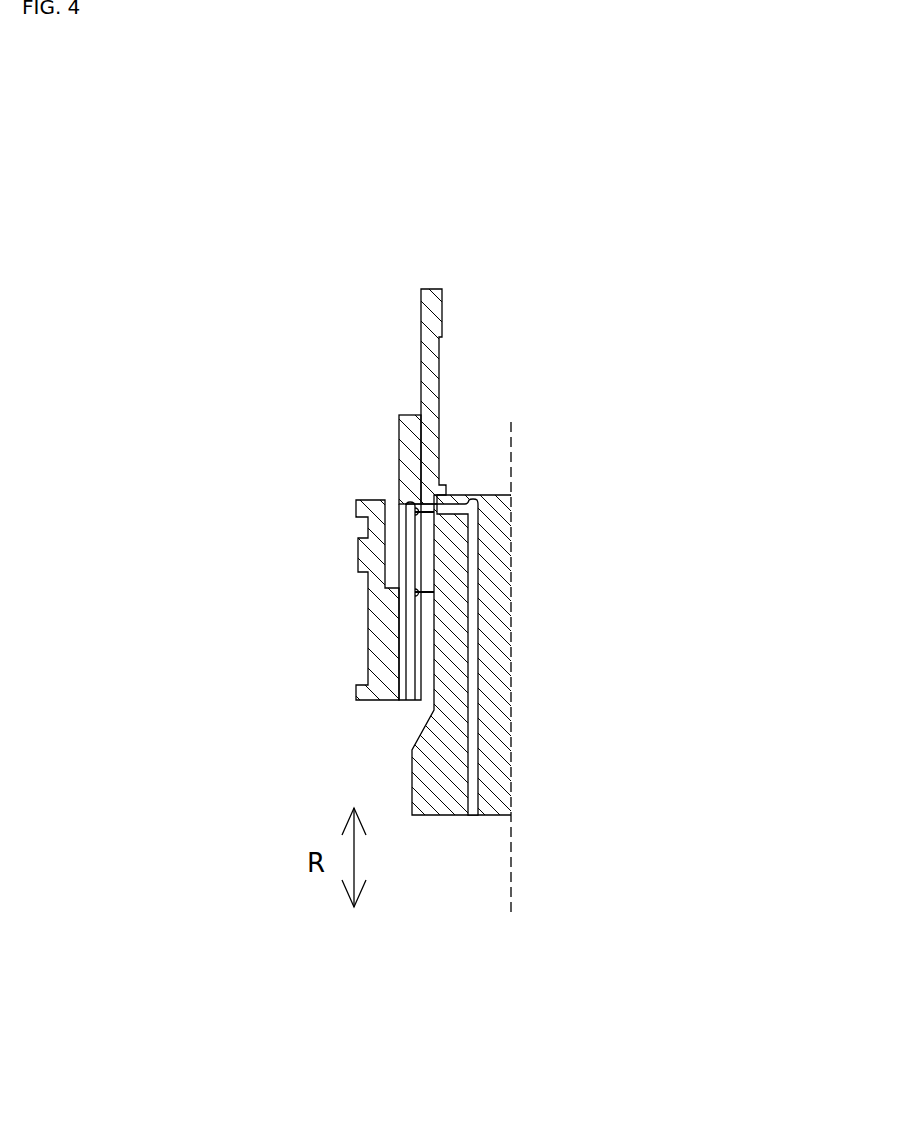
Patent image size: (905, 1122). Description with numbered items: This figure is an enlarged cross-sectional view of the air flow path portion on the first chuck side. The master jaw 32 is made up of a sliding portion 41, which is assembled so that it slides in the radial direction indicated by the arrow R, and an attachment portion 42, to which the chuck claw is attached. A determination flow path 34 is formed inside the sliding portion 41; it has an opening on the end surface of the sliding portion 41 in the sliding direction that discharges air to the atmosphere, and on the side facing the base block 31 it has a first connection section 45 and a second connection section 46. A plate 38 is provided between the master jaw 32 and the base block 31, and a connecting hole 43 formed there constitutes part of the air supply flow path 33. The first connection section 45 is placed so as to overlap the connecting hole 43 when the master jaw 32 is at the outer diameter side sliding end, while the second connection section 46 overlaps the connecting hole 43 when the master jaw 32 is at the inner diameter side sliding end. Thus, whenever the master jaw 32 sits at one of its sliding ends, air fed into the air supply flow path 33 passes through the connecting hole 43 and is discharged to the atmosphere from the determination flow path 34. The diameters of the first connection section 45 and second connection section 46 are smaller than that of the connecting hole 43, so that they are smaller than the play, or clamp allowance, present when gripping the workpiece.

The base block 31 is at (493, 714).
The master jaw 32 is at (320, 377).
The air supply flow path 33 is at (475, 578).
The determination flow path 34 is at (410, 702).
The plate 38 is at (440, 330).
The sliding portion 41 is at (398, 414).
The attachment portion 42 is at (371, 499).
The connecting hole 43 is at (425, 499).
The first connection section 45 is at (412, 513).
The second connection section 46 is at (412, 592).